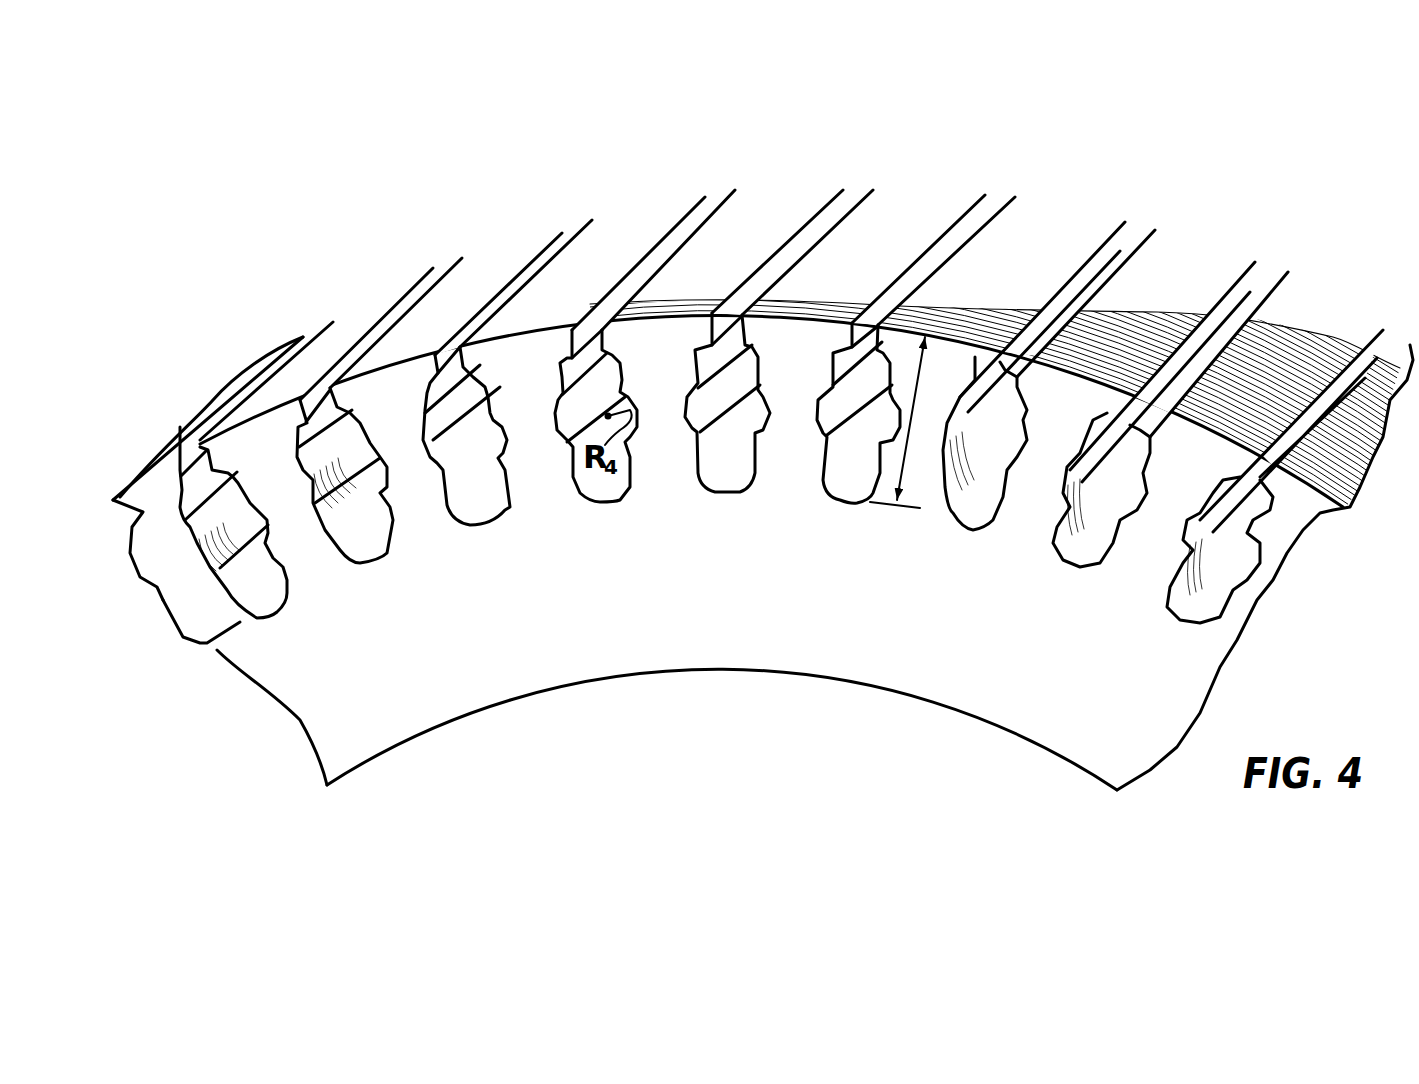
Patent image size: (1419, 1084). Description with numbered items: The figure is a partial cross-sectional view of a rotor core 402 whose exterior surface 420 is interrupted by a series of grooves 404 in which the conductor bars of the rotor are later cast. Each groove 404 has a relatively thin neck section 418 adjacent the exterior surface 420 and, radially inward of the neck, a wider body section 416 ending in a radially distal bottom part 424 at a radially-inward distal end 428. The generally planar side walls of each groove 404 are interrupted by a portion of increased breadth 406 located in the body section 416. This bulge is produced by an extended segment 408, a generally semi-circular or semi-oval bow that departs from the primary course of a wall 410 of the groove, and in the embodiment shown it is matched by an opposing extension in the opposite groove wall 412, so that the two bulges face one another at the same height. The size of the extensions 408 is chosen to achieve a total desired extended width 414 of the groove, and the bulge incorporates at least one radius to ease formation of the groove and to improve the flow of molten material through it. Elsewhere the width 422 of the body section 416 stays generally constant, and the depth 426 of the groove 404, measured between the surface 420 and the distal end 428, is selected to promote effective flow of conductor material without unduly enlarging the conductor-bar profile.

The rotor core 402 is at (1048, 661).
The grooves 404 is at (650, 250).
The portion of increased breadth 406 is at (281, 533).
The extended segment 408 is at (300, 498).
The wall of the groove 410 is at (332, 535).
The opposite groove wall 412 is at (393, 508).
The extended width 414 is at (423, 450).
The body section 416 is at (163, 600).
The neck section 418 is at (172, 477).
The exterior surface 420 is at (350, 330).
The width of the body section 422 is at (567, 463).
The bottom part 424 is at (812, 473).
The depth 426 is at (905, 484).
The radially-inward distal end 428 is at (730, 497).